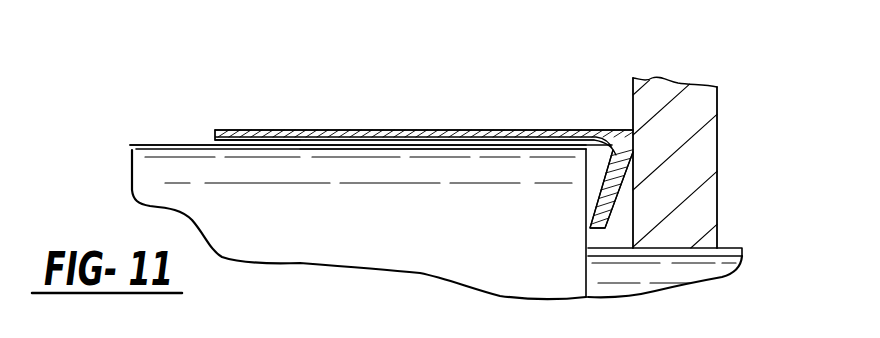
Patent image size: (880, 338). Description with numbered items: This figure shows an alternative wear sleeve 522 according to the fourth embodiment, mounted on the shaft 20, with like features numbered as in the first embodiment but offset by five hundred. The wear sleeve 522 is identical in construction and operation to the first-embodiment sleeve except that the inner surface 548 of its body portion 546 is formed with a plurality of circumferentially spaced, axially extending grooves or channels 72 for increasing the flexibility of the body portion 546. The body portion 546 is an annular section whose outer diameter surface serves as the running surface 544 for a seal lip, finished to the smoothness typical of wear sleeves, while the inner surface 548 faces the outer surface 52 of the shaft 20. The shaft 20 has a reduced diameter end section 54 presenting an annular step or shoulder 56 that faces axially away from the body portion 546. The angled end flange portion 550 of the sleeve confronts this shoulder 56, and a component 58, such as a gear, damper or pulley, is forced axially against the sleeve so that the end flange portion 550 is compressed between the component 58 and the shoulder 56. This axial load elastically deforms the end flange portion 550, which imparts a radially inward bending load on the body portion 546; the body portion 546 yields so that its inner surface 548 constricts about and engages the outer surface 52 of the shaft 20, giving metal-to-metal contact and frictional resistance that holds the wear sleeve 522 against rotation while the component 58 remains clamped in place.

The shaft 20 is at (147, 166).
The outer surface of the shaft 52 is at (173, 144).
The reduced diameter end section 54 is at (733, 248).
The shoulder 56 is at (590, 238).
The component 58 is at (700, 95).
The grooves or channels 72 is at (246, 130).
The wear sleeve 522 is at (332, 130).
The running surface 544 is at (410, 130).
The body portion 546 is at (482, 130).
The inner surface 548 is at (397, 151).
The end flange portion 550 is at (622, 176).